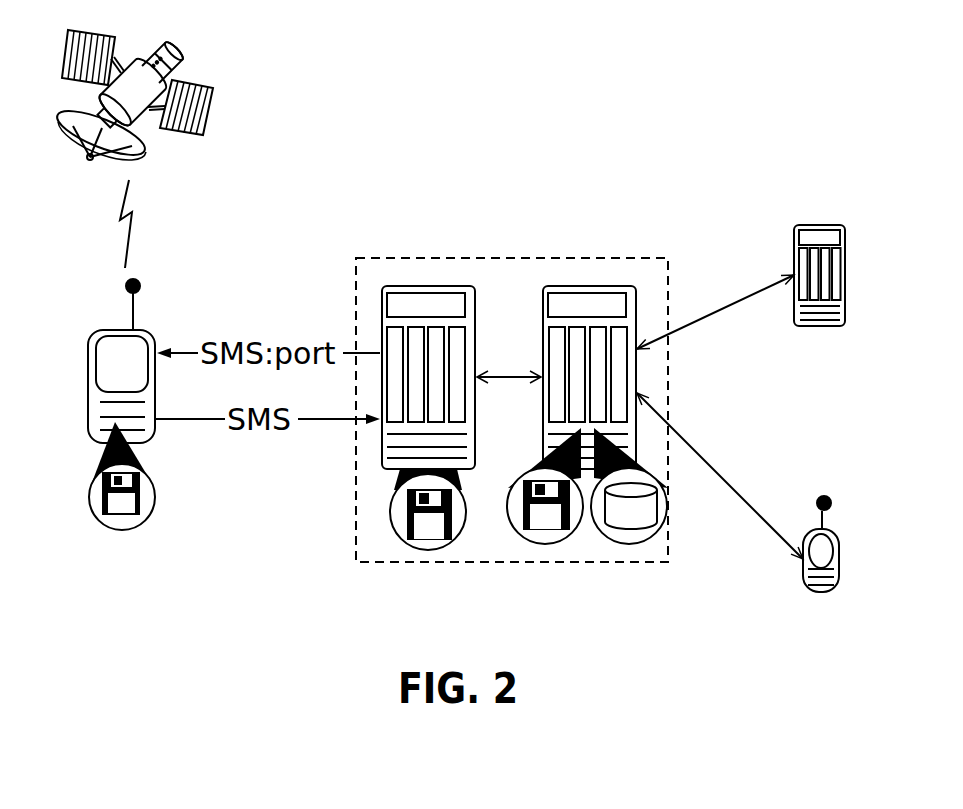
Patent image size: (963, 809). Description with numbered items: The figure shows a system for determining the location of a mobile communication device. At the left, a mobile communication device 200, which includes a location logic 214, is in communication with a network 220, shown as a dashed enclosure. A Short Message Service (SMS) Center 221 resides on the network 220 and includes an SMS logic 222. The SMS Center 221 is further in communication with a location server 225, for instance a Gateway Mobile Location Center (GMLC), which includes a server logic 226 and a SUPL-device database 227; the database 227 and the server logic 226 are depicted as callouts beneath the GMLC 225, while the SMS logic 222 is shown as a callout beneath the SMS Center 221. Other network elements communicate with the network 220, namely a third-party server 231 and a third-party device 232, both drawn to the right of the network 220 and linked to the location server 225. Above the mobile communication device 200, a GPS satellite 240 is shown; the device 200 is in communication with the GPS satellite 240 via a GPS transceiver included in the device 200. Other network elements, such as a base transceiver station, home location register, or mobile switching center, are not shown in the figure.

The mobile communication device 200 is at (87, 361).
The location logic 214 is at (122, 530).
The network 220 is at (512, 384).
The Short Message Service (SMS) Center 221 is at (366, 356).
The SMS logic 222 is at (395, 541).
The location server 225 is at (647, 347).
The server logic 226 is at (577, 517).
The SUPL-device database 227 is at (670, 512).
The third-party server 231 is at (754, 229).
The third-party device 232 is at (759, 584).
The GPS satellite 240 is at (168, 82).